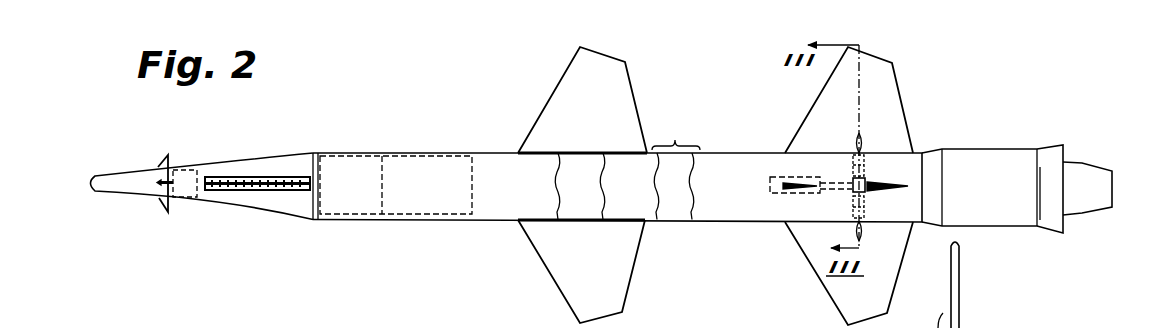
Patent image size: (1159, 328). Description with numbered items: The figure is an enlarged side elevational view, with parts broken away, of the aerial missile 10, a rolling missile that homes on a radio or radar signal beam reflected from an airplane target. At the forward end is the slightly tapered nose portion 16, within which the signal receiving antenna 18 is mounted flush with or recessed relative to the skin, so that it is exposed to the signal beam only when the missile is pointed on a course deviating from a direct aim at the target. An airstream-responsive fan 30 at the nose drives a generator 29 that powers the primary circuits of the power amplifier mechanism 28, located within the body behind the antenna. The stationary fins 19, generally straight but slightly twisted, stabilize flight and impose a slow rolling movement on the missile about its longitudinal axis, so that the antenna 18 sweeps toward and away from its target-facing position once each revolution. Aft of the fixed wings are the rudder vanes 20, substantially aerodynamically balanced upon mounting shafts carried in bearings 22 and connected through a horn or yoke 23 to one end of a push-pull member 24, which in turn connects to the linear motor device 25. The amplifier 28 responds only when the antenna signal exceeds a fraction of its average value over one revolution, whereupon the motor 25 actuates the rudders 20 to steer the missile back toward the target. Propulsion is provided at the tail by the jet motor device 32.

The aerial missile 10 is at (473, 148).
The nose portion 16 is at (256, 162).
The signal receiving antenna 18 is at (268, 191).
The stationary fins 19 is at (622, 98).
The rudder vanes 20 is at (900, 110).
The bearings 22 is at (865, 165).
The horn or yoke 23 is at (850, 193).
The push-pull member 24 is at (840, 177).
The linear motor device 25 is at (768, 180).
The power amplifier mechanism 28 is at (425, 202).
The generator 29 is at (193, 197).
The airstream-responsive fan 30 is at (168, 157).
The jet motor device 32 is at (990, 156).